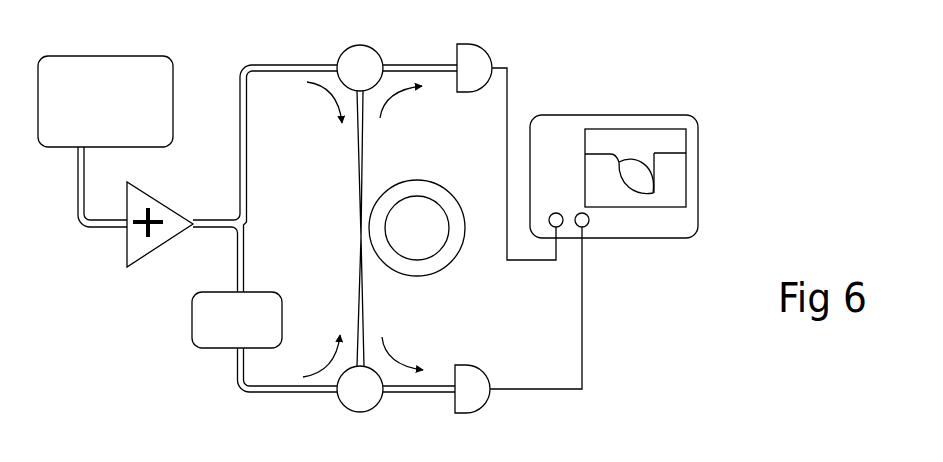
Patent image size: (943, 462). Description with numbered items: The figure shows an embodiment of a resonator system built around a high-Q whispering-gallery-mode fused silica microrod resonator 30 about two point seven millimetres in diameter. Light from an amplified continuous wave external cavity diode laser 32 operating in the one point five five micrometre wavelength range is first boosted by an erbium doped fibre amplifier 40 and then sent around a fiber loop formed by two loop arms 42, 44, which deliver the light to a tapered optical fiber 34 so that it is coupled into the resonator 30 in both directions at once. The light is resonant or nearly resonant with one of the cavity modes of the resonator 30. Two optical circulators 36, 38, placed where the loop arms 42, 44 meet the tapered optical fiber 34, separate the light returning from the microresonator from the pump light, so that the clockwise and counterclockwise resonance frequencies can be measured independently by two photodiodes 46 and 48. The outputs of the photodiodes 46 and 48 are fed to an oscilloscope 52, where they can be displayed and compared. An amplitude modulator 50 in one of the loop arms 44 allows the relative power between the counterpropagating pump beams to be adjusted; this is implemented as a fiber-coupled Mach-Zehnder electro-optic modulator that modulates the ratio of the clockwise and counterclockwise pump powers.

The microrod resonator 30 is at (433, 248).
The external cavity diode laser 32 is at (93, 63).
The tapered optical fiber 34 is at (362, 232).
The optical circulator 36 is at (365, 63).
The optical circulator 38 is at (366, 393).
The erbium doped fibre amplifier 40 is at (160, 205).
The loop arm 42 is at (253, 63).
The loop arm 44 is at (240, 388).
The photodiode 46 is at (478, 63).
The photodiode 48 is at (475, 393).
The amplitude modulator 50 is at (265, 298).
The oscilloscope 52 is at (665, 227).